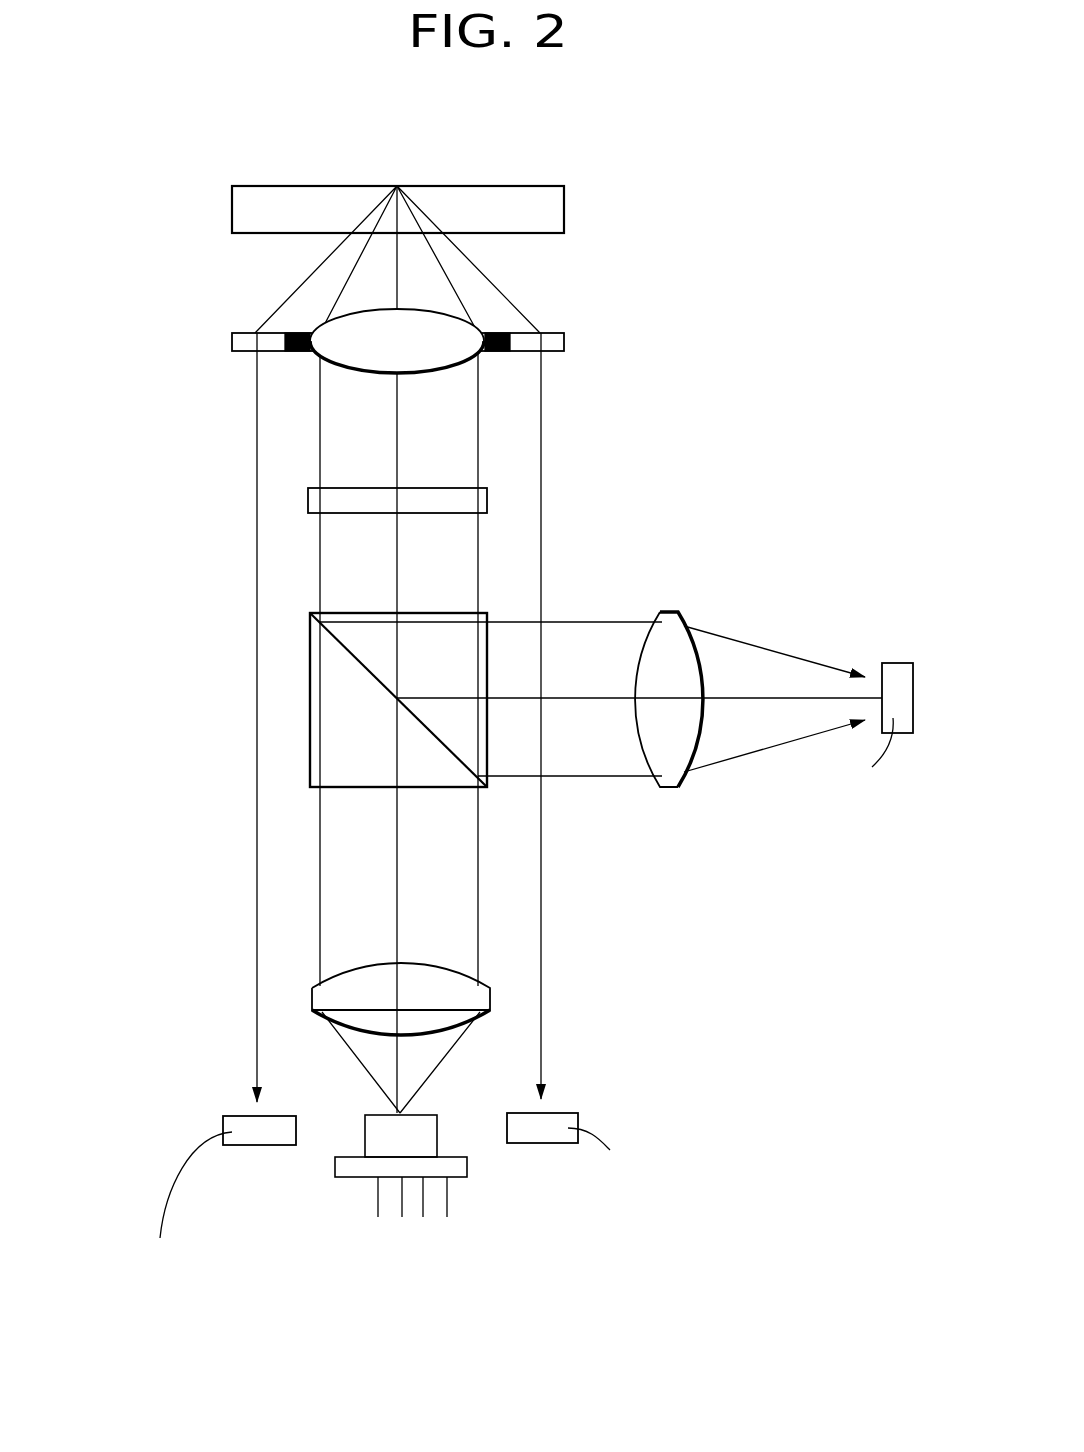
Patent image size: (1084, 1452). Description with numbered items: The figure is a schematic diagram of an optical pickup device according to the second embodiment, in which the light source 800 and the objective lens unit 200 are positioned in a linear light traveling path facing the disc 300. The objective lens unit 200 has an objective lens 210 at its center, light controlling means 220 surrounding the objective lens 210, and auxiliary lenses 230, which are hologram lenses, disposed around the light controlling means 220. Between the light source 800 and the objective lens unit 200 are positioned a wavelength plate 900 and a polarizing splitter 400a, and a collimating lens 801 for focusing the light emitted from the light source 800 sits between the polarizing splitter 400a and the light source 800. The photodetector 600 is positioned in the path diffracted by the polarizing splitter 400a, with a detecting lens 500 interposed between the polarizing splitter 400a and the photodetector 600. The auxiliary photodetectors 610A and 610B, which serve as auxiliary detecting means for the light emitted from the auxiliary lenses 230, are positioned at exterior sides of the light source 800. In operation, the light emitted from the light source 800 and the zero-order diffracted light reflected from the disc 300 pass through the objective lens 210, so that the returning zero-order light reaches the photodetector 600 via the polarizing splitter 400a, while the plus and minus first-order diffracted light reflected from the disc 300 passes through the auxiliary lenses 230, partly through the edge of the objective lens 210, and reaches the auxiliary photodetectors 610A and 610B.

The disc 300 is at (564, 208).
The objective lens unit 200 is at (439, 379).
The auxiliary lenses 230 is at (238, 333).
The light controlling means 220 is at (500, 352).
The objective lens 210 is at (433, 372).
The wavelength plate 900 is at (308, 501).
The polarizing splitter 400a is at (310, 670).
The detecting lens 500 is at (670, 612).
The photodetector 600 is at (898, 663).
The collimating lens 801 is at (492, 1000).
The light source 800 is at (447, 1217).
The auxiliary photodetector 610A is at (263, 1146).
The auxiliary photodetector 610B is at (555, 1143).